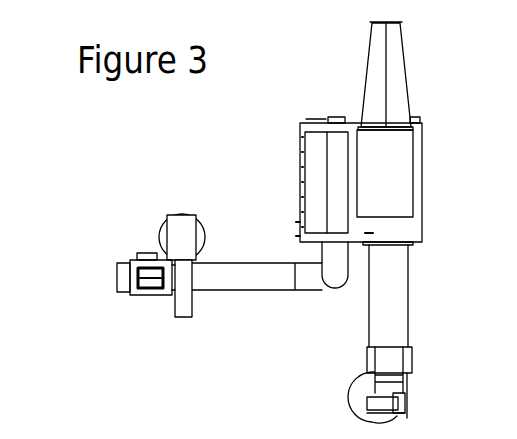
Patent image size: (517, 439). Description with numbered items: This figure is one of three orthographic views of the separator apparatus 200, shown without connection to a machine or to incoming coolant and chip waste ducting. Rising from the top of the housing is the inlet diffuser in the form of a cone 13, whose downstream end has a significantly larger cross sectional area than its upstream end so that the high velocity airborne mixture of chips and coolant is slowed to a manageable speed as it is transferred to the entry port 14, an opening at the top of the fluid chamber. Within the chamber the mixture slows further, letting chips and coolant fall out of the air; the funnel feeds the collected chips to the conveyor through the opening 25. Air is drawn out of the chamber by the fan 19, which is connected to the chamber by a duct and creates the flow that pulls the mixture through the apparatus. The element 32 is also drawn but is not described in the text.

The separator apparatus 200 is at (231, 151).
The cone 13 is at (395, 79).
The entry port 14 is at (395, 180).
The opening 25 is at (295, 215).
The pump 32 is at (133, 268).
The fan 19 is at (185, 295).